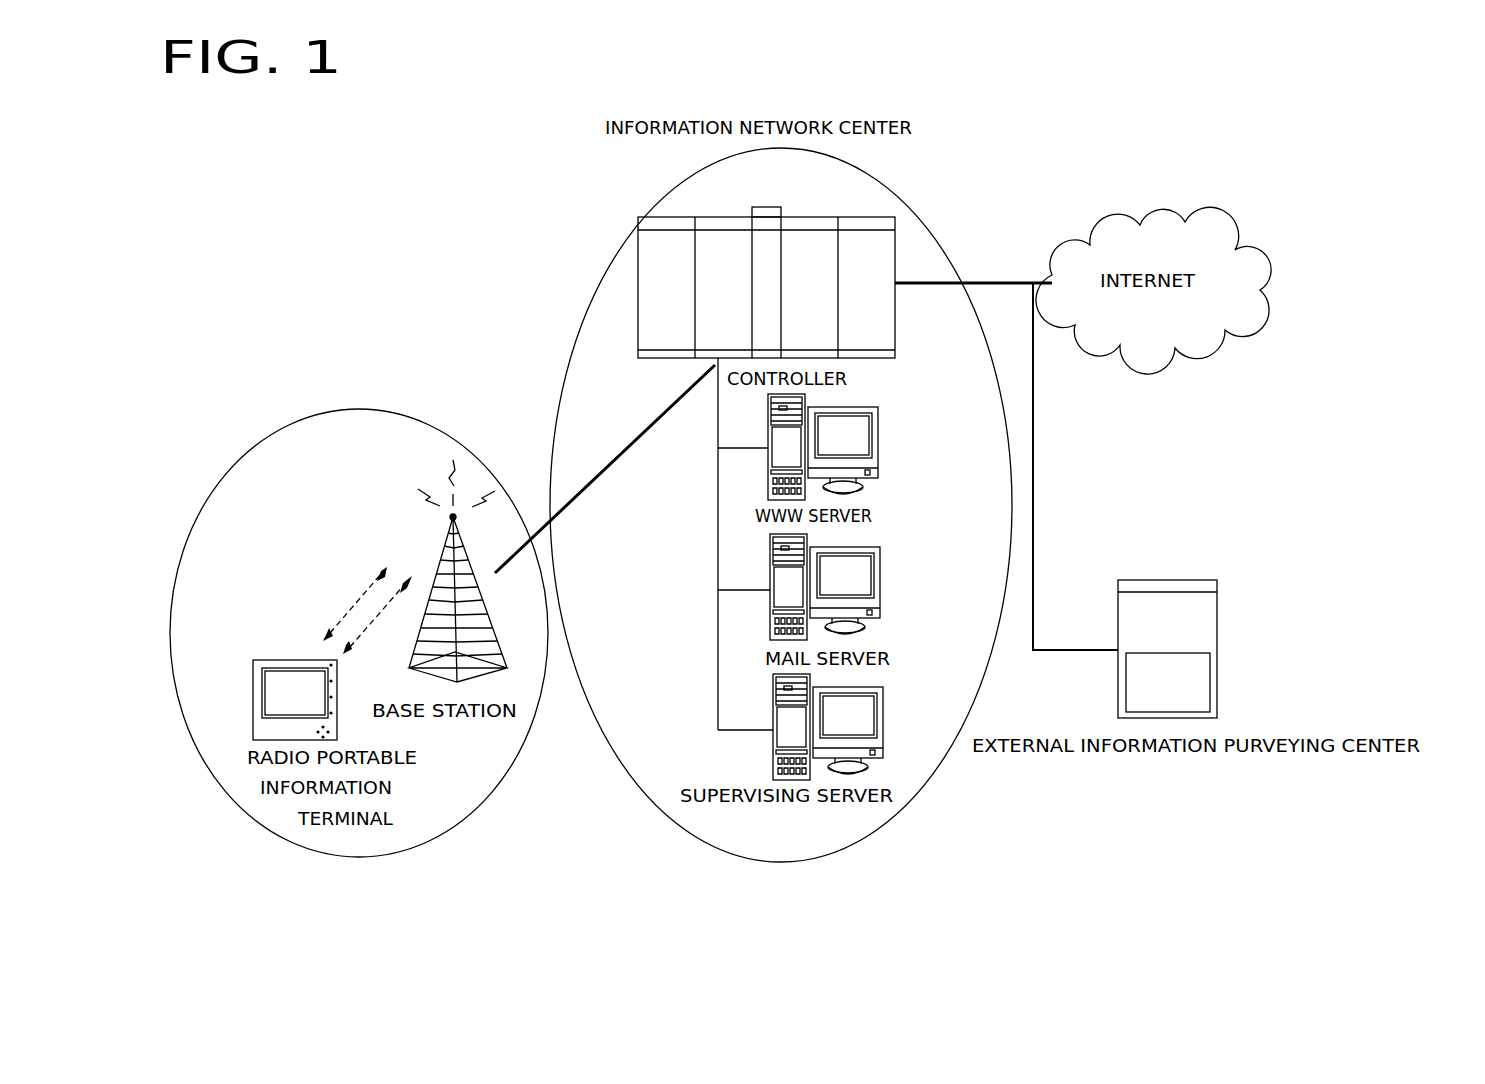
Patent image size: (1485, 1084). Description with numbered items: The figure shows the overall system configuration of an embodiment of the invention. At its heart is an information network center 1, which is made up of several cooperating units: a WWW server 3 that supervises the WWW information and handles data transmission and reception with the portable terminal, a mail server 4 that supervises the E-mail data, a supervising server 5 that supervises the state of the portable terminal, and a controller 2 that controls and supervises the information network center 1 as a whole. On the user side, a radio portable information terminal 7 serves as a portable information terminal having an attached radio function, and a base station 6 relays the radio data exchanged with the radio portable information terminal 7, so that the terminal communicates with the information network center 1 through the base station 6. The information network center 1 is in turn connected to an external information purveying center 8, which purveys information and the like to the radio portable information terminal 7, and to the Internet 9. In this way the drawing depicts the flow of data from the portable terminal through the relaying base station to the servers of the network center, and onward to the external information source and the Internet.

The information network center 1 is at (925, 222).
The controller 2 is at (895, 318).
The WWW server 3 is at (880, 433).
The mail server 4 is at (884, 560).
The supervising server 5 is at (888, 699).
The base station 6 is at (443, 548).
The radio portable information terminal 7 is at (265, 658).
The external information purveying center 8 is at (1183, 578).
The Internet 9 is at (1185, 350).